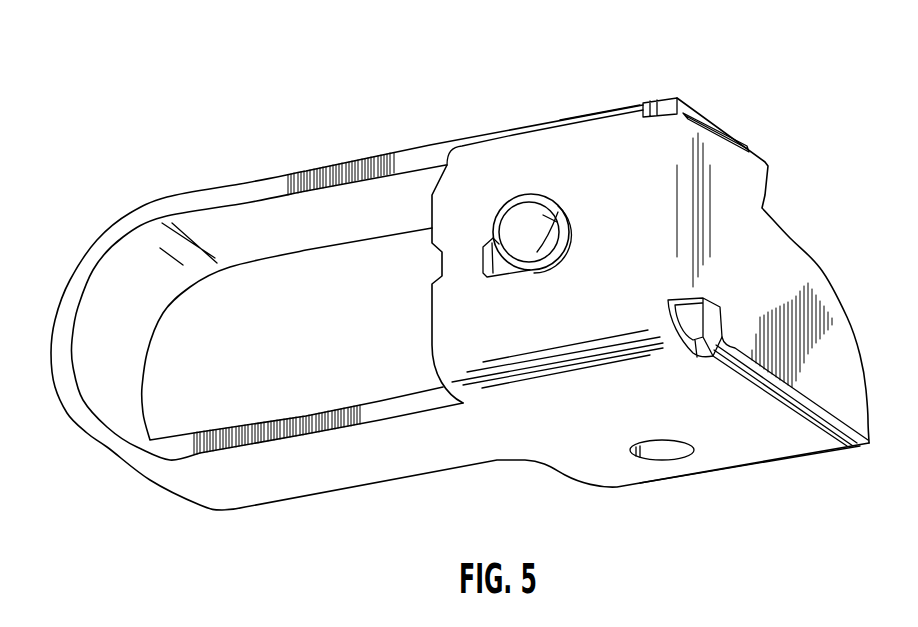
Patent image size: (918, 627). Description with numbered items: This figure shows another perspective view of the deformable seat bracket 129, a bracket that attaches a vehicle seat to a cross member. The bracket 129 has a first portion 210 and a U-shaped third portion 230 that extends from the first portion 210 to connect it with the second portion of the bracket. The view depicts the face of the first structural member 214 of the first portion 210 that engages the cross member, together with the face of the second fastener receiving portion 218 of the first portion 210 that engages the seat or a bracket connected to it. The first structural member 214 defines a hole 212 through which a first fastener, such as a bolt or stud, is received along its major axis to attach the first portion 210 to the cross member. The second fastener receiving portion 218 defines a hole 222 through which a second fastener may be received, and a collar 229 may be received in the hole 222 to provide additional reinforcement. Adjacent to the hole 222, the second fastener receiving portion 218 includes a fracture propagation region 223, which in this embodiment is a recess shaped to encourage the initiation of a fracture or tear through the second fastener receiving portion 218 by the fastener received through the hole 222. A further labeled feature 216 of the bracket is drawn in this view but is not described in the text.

The seat bracket 129 is at (166, 80).
The first portion 210 is at (793, 193).
The hole 212 is at (661, 450).
The first structural member 214 is at (740, 448).
The side wall 216 is at (782, 273).
The second fastener receiving portion 218 is at (600, 167).
The hole 222 is at (543, 232).
The fracture propagation region 223 is at (487, 238).
The collar 229 is at (518, 223).
The third portion 230 is at (105, 290).